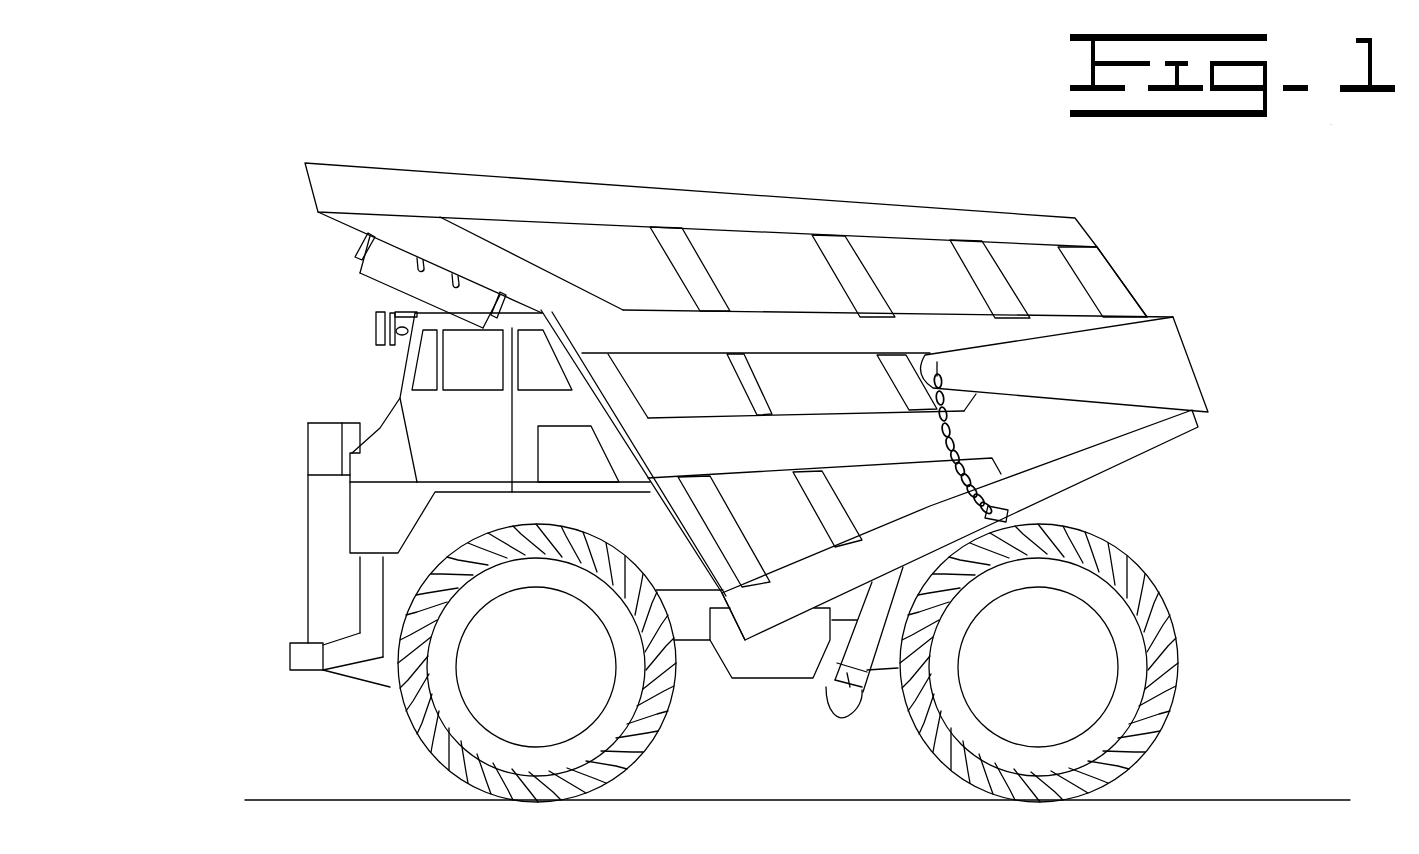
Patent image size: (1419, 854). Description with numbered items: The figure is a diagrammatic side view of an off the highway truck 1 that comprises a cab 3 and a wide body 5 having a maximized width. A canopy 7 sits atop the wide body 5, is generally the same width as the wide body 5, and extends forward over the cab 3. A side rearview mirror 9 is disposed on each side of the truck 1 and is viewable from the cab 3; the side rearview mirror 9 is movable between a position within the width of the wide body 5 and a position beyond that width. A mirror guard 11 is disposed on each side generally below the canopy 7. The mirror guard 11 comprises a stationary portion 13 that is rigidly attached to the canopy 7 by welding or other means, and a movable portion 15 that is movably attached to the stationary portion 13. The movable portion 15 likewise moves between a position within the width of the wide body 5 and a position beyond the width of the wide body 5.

The off the highway truck 1 is at (228, 574).
The cab 3 is at (443, 420).
The wide body 5 is at (542, 247).
The canopy 7 is at (387, 225).
The side rearview mirror 9 is at (380, 322).
The mirror guard 11 is at (388, 267).
The stationary portion 13 is at (360, 246).
The movable portion 15 is at (388, 285).